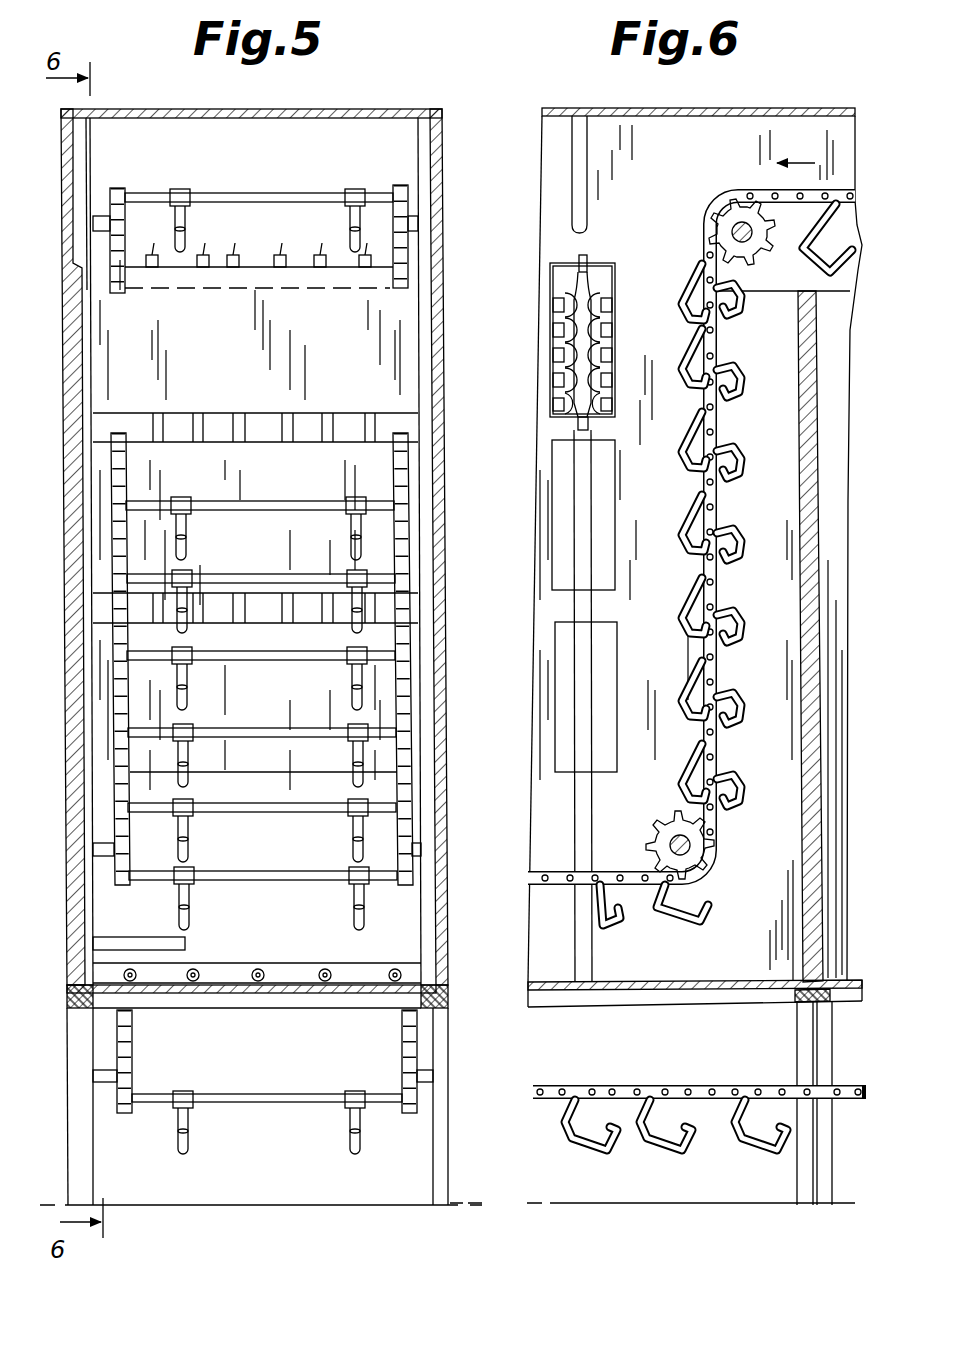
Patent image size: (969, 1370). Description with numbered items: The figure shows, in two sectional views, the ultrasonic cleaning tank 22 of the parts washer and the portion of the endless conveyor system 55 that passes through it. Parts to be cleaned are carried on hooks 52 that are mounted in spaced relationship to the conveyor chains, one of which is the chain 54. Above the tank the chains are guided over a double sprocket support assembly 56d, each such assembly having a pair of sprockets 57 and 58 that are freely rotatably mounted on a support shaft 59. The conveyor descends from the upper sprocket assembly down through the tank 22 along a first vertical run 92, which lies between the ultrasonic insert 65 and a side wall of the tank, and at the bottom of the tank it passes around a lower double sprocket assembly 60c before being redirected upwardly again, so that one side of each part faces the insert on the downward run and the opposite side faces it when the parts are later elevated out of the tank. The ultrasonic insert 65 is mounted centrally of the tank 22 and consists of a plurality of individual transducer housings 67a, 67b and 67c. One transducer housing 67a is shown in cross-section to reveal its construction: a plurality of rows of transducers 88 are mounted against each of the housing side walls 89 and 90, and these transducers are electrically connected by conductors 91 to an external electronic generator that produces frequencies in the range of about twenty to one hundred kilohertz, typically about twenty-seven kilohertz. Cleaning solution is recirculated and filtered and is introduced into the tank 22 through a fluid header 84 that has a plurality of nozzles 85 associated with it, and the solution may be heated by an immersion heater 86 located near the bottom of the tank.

In FIG. 5, the ultrasonic cleaning tank 22 is at (118, 926).
In FIG. 6, the ultrasonic cleaning tank 22 is at (694, 989).
In FIG. 5, the carriers or hooks 52 is at (187, 213).
In FIG. 6, the carriers or hooks 52 is at (736, 743).
In FIG. 5, the chain 54 is at (412, 636).
In FIG. 6, the endless conveyor system 55 is at (719, 593).
In FIG. 5, the double sprocket support assembly 56d is at (133, 270).
In FIG. 5, the sprocket 57 is at (150, 160).
In FIG. 5, the sprocket 58 is at (396, 190).
In FIG. 6, the sprocket 58 is at (746, 191).
In FIG. 5, the support shaft 59 is at (292, 158).
In FIG. 6, the lower double sprocket assembly 60c is at (704, 863).
In FIG. 6, the ultrasonic insert 65 is at (548, 252).
In FIG. 5, the transducer housing 67a is at (388, 312).
In FIG. 6, the transducer housing 67a is at (548, 379).
In FIG. 5, the transducer housing 67b is at (378, 467).
In FIG. 6, the transducer housing 67b is at (680, 488).
In FIG. 5, the transducer housing 67c is at (388, 690).
In FIG. 6, the transducer housing 67c is at (672, 642).
In FIG. 5, the fluid header 84 is at (300, 977).
In FIG. 5, the nozzles 85 is at (212, 975).
In FIG. 5, the immersion heater 86 is at (176, 946).
In FIG. 6, the transducers 88 is at (612, 302).
In FIG. 5, the side wall 89 is at (250, 383).
In FIG. 6, the side wall 89 is at (548, 276).
In FIG. 6, the side wall 90 is at (606, 334).
In FIG. 5, the conductors 91 is at (278, 262).
In FIG. 6, the conductors 91 is at (587, 258).
In FIG. 6, the first vertical run 92 is at (719, 413).